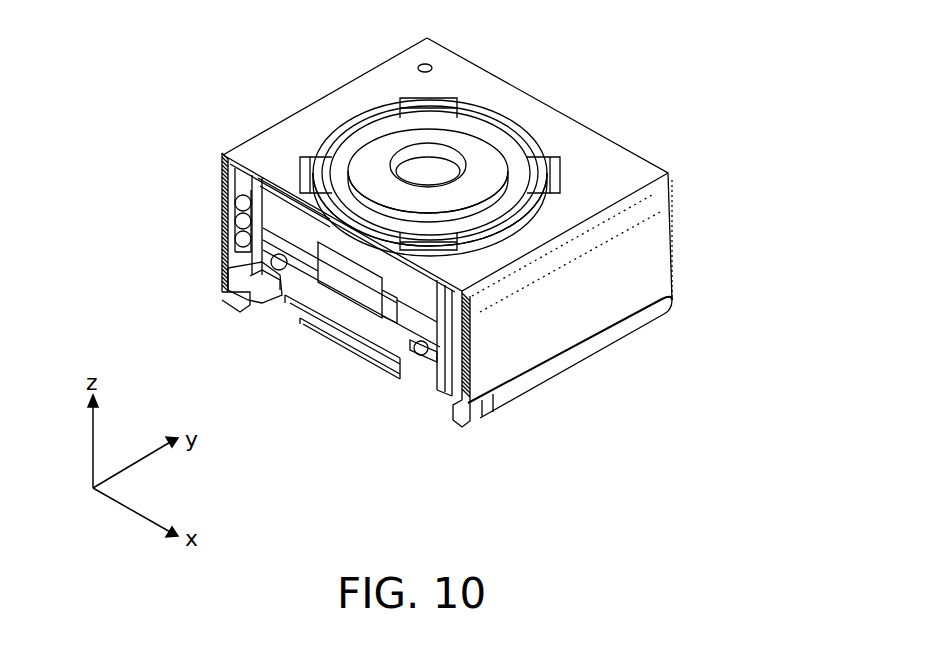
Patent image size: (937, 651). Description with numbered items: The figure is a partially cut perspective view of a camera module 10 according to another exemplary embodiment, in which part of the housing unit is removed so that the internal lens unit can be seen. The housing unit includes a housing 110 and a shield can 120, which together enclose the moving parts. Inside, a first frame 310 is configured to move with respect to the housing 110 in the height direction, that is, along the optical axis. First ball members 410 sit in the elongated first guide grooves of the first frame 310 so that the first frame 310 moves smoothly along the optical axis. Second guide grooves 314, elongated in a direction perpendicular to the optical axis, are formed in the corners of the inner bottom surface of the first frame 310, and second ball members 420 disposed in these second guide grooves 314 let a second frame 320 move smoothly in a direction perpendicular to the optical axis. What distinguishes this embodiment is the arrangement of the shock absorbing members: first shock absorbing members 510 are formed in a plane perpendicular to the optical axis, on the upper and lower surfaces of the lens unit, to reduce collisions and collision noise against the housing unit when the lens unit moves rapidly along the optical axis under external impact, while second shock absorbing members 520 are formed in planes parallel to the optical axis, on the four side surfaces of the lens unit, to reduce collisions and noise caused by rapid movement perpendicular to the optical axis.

The camera module 10 is at (553, 82).
The housing 110 is at (630, 327).
The shield can 120 is at (607, 158).
The first frame 310 is at (288, 283).
The second guide grooves 314 is at (256, 285).
The second frame 320 is at (403, 327).
The first ball members 410 is at (236, 204).
The second ball members 420 is at (247, 258).
The first shock absorbing members 510 is at (285, 187).
The second shock absorbing members 520 is at (412, 350).